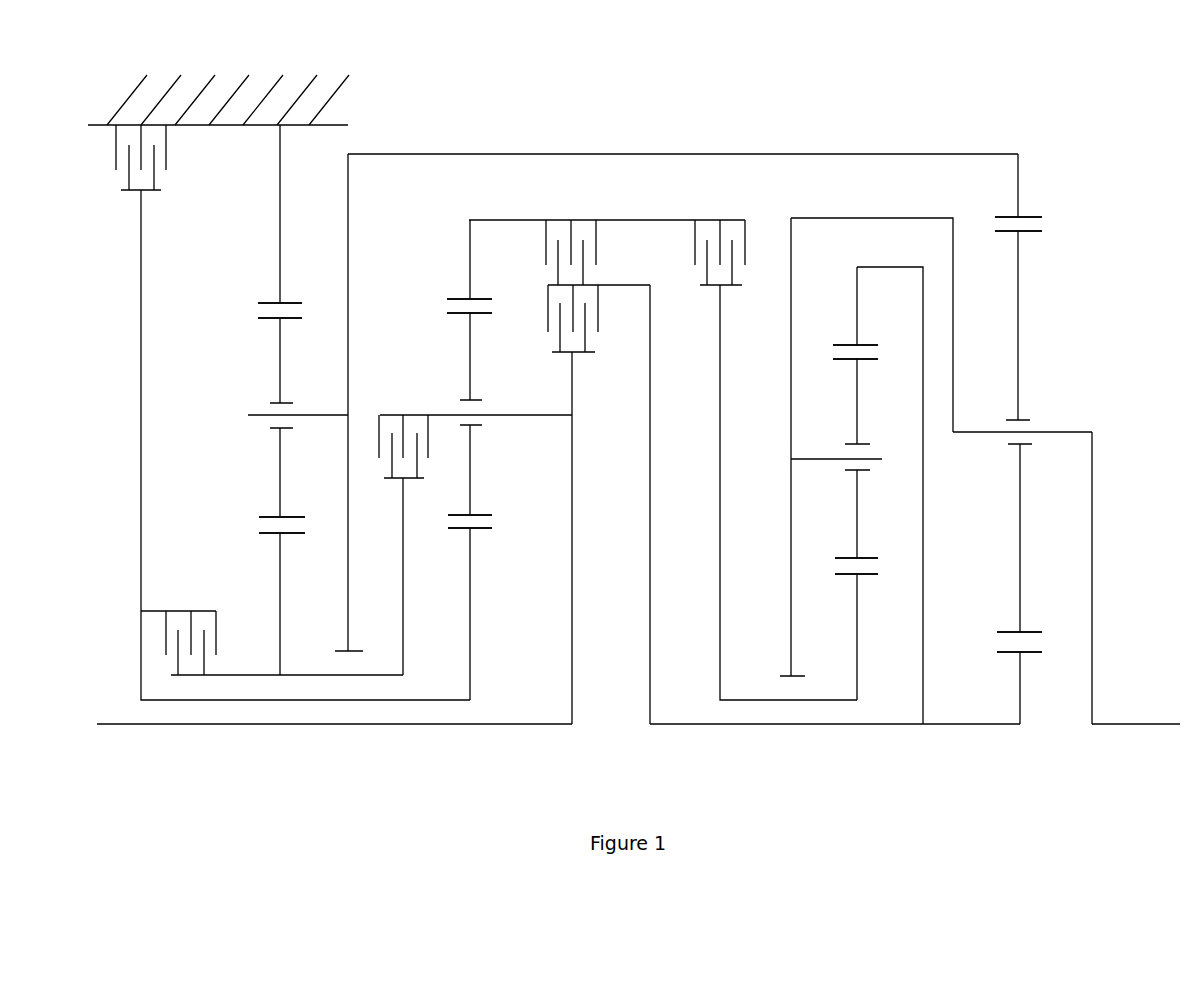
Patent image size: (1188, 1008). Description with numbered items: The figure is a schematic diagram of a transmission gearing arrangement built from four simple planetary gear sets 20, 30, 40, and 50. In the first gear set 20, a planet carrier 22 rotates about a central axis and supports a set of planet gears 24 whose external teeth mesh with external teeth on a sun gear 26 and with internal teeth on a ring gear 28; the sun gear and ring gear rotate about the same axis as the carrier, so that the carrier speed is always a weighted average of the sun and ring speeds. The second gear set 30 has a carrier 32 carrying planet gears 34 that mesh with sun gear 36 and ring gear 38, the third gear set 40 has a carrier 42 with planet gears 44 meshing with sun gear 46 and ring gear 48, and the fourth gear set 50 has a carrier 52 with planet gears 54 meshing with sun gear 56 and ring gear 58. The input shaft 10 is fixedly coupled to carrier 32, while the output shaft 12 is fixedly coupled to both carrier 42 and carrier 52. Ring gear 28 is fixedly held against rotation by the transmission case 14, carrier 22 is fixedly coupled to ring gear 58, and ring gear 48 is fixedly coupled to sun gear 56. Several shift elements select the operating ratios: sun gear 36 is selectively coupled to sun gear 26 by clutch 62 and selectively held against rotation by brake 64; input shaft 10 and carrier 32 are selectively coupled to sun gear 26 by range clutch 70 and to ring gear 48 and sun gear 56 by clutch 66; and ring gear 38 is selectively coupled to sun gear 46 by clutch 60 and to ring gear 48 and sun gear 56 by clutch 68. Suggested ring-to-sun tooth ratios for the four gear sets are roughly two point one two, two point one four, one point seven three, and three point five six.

The input shaft 10 is at (212, 727).
The output shaft 12 is at (1142, 724).
The transmission case 14 is at (337, 92).
The planetary gear set 20 is at (298, 546).
The planet carrier 22 is at (347, 242).
The planet gears 24 is at (283, 368).
The sun gear 26 is at (280, 567).
The ring gear 28 is at (280, 272).
The planetary gear set 30 is at (476, 497).
The planet carrier 32 is at (572, 478).
The planet gears 34 is at (472, 362).
The sun gear 36 is at (470, 563).
The ring gear 38 is at (470, 268).
The planetary gear set 40 is at (835, 495).
The planet carrier 42 is at (791, 463).
The planet gears 44 is at (858, 408).
The sun gear 46 is at (857, 608).
The ring gear 48 is at (857, 313).
The planetary gear set 50 is at (1022, 465).
The planet carrier 52 is at (1092, 445).
The planet gears 54 is at (1022, 377).
The sun gear 56 is at (1020, 688).
The ring gear 58 is at (1015, 193).
The clutch 60 is at (730, 217).
The clutch 62 is at (208, 610).
The brake 64 is at (168, 148).
The clutch 66 is at (598, 310).
The clutch 68 is at (587, 217).
The range clutch 70 is at (417, 412).